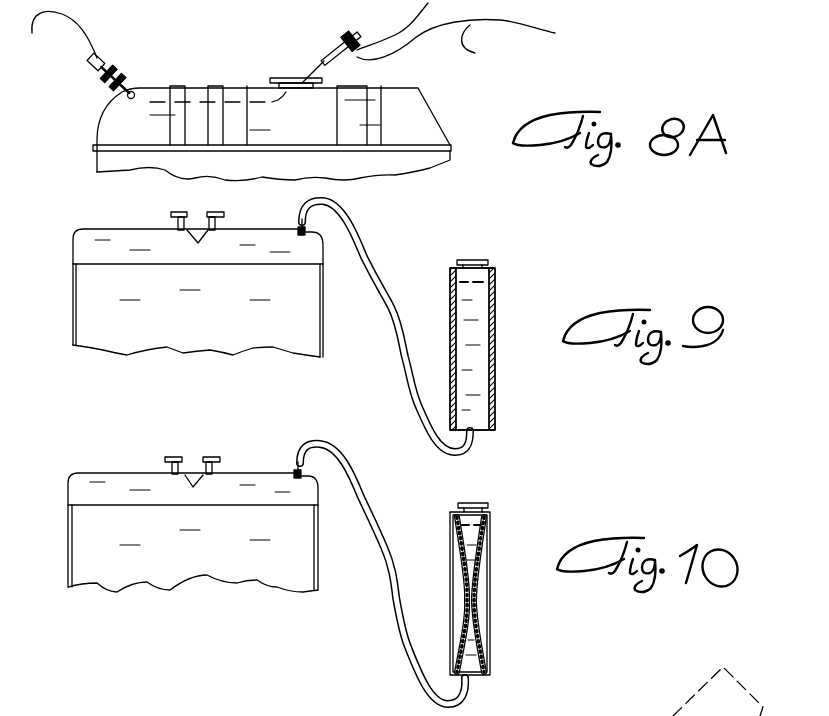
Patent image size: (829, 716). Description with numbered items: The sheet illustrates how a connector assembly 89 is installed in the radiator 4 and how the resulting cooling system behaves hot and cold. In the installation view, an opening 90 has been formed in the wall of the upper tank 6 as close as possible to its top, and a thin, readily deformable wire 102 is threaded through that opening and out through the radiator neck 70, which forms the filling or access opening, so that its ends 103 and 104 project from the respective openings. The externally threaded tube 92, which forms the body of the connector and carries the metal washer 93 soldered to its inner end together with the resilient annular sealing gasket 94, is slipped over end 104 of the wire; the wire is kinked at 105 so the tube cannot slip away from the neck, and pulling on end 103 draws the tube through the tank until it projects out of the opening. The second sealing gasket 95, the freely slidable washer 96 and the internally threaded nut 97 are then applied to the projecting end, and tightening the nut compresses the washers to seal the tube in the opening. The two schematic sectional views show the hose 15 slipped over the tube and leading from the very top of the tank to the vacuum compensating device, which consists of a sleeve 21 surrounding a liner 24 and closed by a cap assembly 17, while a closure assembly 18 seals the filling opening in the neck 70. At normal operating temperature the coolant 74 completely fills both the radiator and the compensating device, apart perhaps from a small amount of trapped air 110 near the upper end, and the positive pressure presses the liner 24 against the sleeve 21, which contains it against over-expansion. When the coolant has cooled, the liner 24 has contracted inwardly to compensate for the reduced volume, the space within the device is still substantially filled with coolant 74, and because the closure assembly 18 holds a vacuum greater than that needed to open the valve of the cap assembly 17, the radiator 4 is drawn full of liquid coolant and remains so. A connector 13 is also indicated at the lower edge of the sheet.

In FIG. 8A, the radiator 4 is at (293, 98).
In FIG. 9, the radiator 4 is at (282, 327).
In FIG. 10, the radiator 4 is at (283, 563).
In FIG. 8A, the upper tank 6 is at (410, 115).
In FIG. 9, the upper tank 6 is at (135, 229).
In FIG. 10, the upper tank 6 is at (136, 473).
In FIG. 10, the connector 13 is at (250, 715).
In FIG. 9, the hose 15 is at (398, 366).
In FIG. 10, the hose 15 is at (396, 638).
In FIG. 9, the cap assembly 17 is at (478, 260).
In FIG. 10, the cap assembly 17 is at (470, 502).
In FIG. 9, the closure assembly 18 is at (203, 210).
In FIG. 10, the closure assembly 18 is at (192, 454).
In FIG. 9, the sleeve 21 is at (506, 332).
In FIG. 10, the sleeve 21 is at (488, 577).
In FIG. 9, the liner 24 is at (492, 330).
In FIG. 10, the liner 24 is at (481, 558).
In FIG. 8A, the radiator neck 70 is at (322, 83).
In FIG. 9, the radiator neck 70 is at (228, 223).
In FIG. 10, the radiator neck 70 is at (220, 470).
In FIG. 9, the coolant 74 is at (300, 221).
In FIG. 10, the coolant 74 is at (297, 458).
In FIG. 9, the connector assembly 89 is at (323, 243).
In FIG. 10, the connector assembly 89 is at (318, 485).
In FIG. 8A, the opening 90 is at (135, 92).
In FIG. 8A, the externally threaded tube 92 is at (326, 48).
In FIG. 8A, the metal washer 93 is at (355, 28).
In FIG. 8A, the resilient annular sealing gasket 94 is at (348, 30).
In FIG. 8A, the second resilient annular sealing gasket 95 is at (134, 88).
In FIG. 8A, the washer 96 is at (95, 92).
In FIG. 8A, the nut 97 is at (84, 67).
In FIG. 8A, the wire 102 is at (196, 98).
In FIG. 8A, the wire end 103 is at (83, 28).
In FIG. 8A, the wire end 104 is at (488, 45).
In FIG. 8A, the kink 105 is at (408, 25).
In FIG. 9, the air 110 is at (490, 278).
In FIG. 10, the air 110 is at (473, 516).